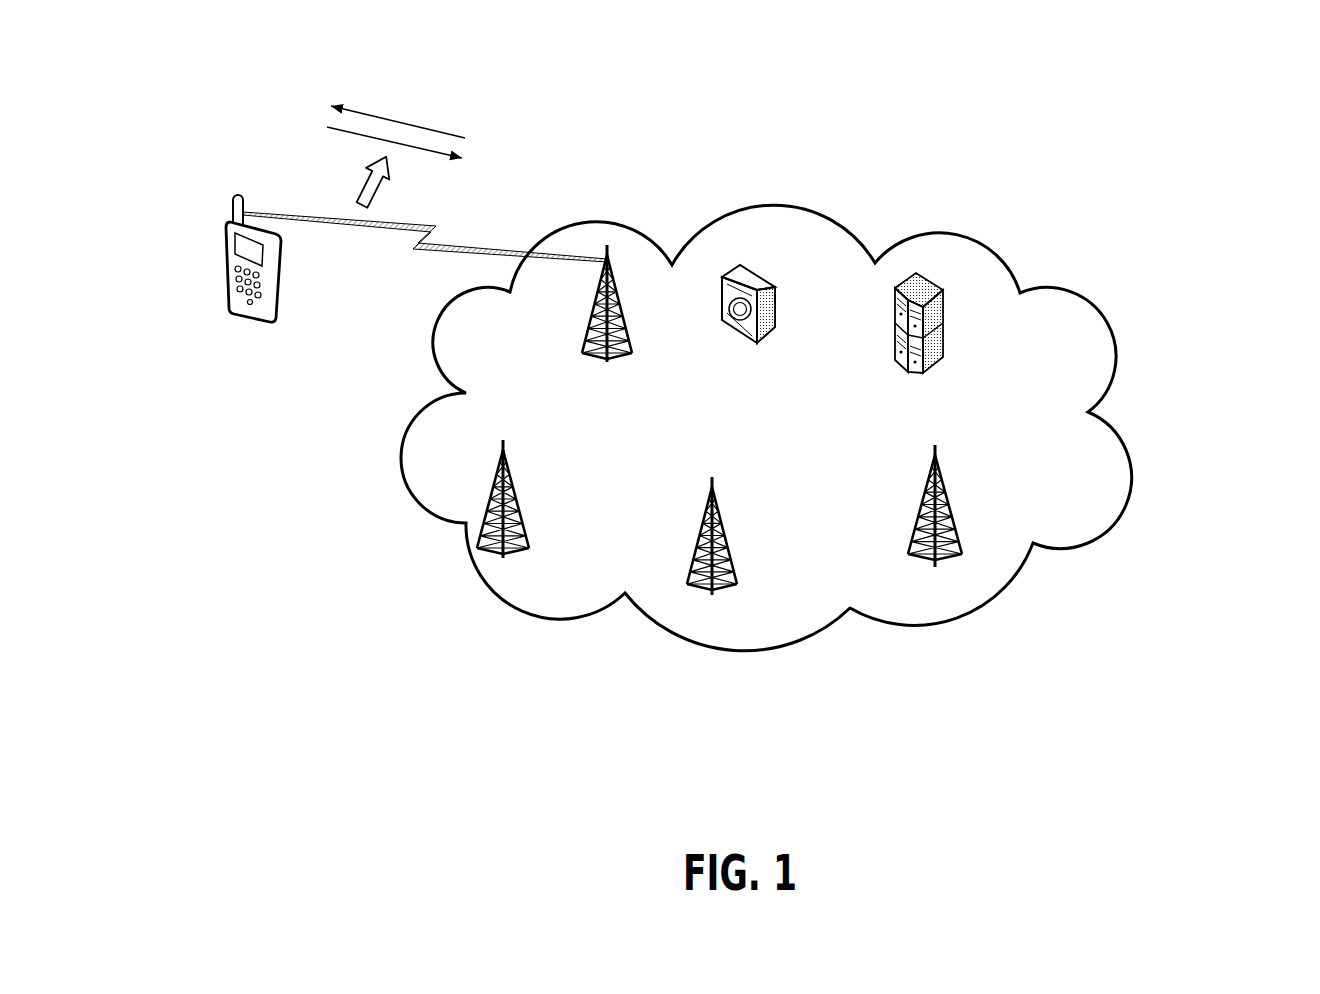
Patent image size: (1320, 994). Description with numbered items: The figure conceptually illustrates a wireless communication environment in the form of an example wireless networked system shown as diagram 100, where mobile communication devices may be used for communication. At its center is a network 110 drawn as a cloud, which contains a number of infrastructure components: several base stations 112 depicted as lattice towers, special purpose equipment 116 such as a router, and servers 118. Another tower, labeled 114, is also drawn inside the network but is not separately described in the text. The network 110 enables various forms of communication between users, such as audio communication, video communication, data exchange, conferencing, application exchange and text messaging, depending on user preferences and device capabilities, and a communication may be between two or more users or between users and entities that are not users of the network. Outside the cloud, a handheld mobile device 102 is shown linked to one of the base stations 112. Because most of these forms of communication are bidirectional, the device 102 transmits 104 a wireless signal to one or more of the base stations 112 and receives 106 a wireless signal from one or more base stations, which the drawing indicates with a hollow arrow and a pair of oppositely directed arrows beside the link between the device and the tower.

The diagram 100 is at (1146, 124).
The device 102 is at (206, 237).
The transmission 104 is at (336, 137).
The reception 106 is at (461, 129).
The network 110 is at (803, 194).
The base stations 112 is at (581, 330).
The base station 114 is at (522, 477).
The special purpose equipment 116 is at (751, 351).
The servers 118 is at (904, 372).